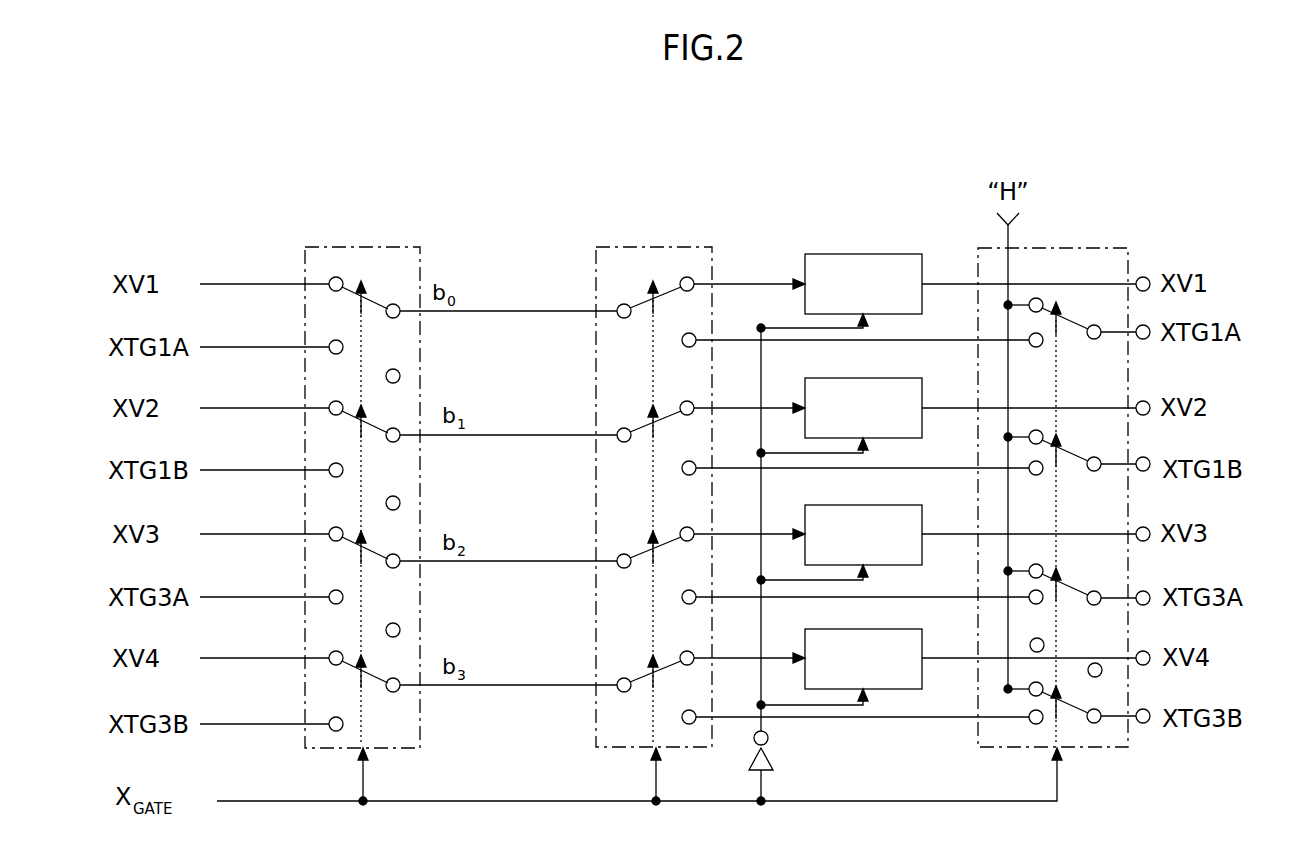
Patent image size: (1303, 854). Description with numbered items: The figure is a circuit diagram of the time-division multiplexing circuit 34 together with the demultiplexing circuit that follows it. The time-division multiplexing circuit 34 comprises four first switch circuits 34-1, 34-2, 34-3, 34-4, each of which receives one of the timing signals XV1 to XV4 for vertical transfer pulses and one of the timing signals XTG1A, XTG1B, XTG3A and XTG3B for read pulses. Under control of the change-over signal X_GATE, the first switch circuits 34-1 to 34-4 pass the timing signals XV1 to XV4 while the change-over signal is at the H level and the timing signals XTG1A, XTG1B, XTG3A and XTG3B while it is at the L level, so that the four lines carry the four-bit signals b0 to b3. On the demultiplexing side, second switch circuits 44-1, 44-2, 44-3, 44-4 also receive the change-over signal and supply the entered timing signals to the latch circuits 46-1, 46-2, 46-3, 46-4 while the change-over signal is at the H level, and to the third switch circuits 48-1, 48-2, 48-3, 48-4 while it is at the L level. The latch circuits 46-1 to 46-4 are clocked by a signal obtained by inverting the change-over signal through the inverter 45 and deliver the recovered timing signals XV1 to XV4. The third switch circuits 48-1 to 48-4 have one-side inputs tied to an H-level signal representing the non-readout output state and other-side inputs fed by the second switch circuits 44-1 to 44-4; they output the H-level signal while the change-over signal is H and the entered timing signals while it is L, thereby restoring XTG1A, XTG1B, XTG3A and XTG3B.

The time-division multiplexing circuit 34 is at (378, 222).
The first switch circuit 34-1 is at (375, 300).
The first switch circuit 34-2 is at (372, 420).
The first switch circuit 34-3 is at (373, 557).
The first switch circuit 34-4 is at (373, 683).
The second switch circuit 44-1 is at (650, 300).
The second switch circuit 44-2 is at (652, 418).
The second switch circuit 44-3 is at (652, 546).
The second switch circuit 44-4 is at (652, 670).
The latch circuit 46-1 is at (830, 254).
The latch circuit 46-2 is at (830, 378).
The latch circuit 46-3 is at (830, 505).
The latch circuit 46-4 is at (830, 629).
The inverter 45 is at (771, 760).
The third switch circuit 48-1 is at (1073, 335).
The third switch circuit 48-2 is at (1072, 452).
The third switch circuit 48-3 is at (1072, 582).
The third switch circuit 48-4 is at (1067, 706).